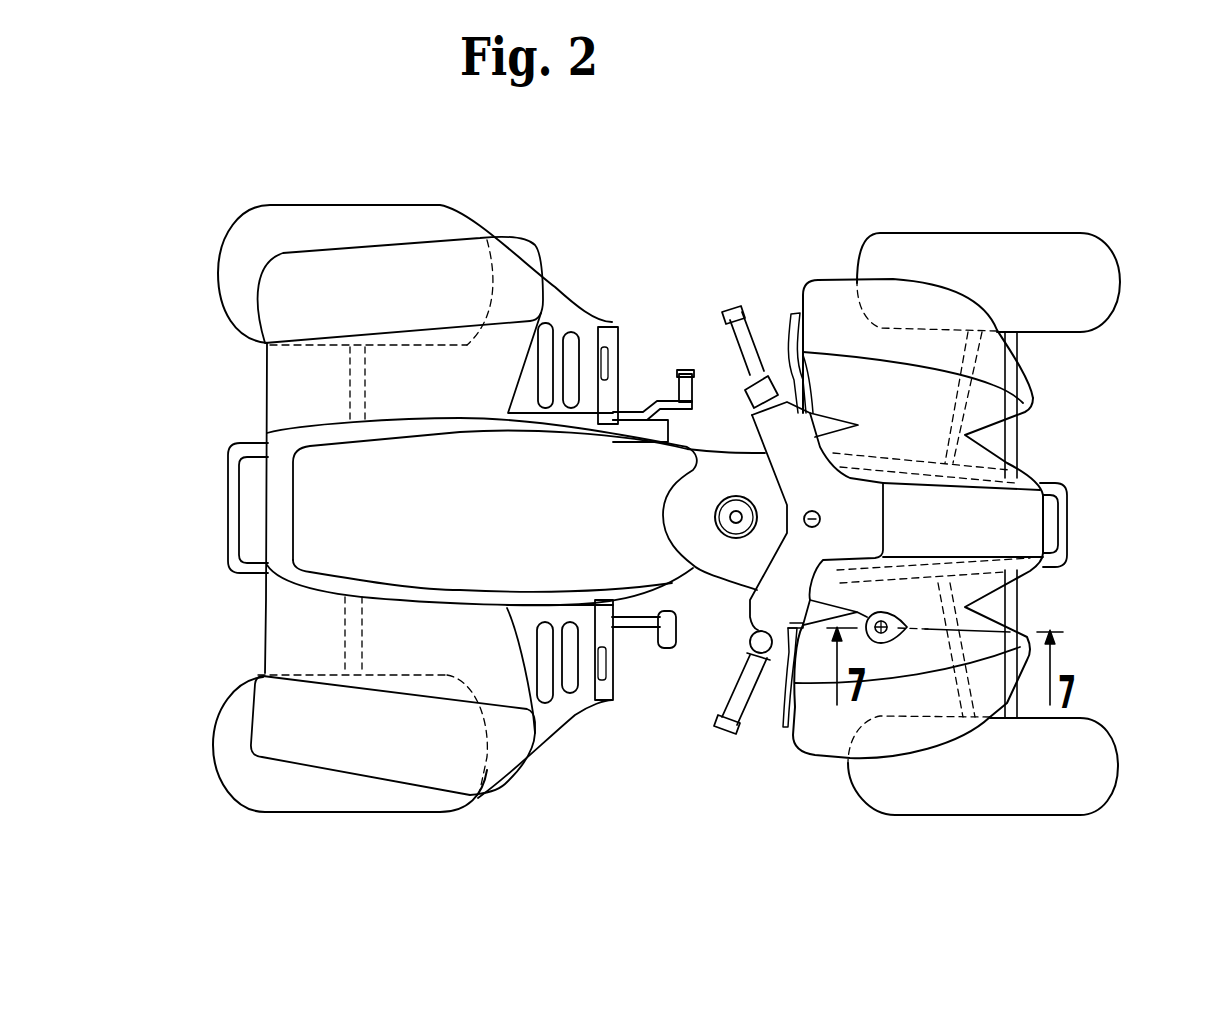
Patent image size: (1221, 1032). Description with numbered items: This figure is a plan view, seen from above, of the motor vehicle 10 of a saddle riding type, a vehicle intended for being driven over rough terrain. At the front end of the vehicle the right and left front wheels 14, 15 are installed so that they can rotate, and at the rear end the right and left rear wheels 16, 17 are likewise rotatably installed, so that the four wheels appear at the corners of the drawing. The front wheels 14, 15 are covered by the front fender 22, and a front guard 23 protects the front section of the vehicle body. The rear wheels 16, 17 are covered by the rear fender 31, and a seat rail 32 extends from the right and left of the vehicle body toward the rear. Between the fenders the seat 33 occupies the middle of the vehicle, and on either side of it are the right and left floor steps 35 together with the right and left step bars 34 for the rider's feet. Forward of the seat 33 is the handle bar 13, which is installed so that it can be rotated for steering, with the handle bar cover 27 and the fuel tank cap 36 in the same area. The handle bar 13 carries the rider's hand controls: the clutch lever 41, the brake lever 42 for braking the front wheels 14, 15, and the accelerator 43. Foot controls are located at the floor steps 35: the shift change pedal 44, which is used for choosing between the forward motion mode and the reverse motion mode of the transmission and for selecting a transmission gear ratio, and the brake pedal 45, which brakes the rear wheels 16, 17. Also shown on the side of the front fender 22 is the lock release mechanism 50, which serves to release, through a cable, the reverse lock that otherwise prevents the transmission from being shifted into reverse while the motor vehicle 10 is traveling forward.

The motor vehicle of a saddle riding type 10 is at (1102, 148).
The handle bar 13 is at (758, 317).
The front wheel 14 is at (993, 233).
The front wheel 15 is at (985, 815).
The rear wheel 16 is at (365, 207).
The rear wheel 17 is at (363, 813).
The front fender 22 is at (898, 283).
The front guard 23 is at (1053, 483).
The handle bar cover 27 is at (818, 505).
The rear fender 31 is at (300, 250).
The seat rail 32 is at (237, 447).
The seat 33 is at (300, 450).
The step bar 34 is at (613, 330).
The floor step 35 is at (572, 322).
The fuel tank cap 36 is at (750, 490).
The clutch lever 41 is at (803, 352).
The brake lever 42 is at (813, 615).
The accelerator 43 is at (753, 710).
The shift change pedal 44 is at (652, 405).
The brake pedal 45 is at (640, 628).
The lock release mechanism 50 is at (883, 652).